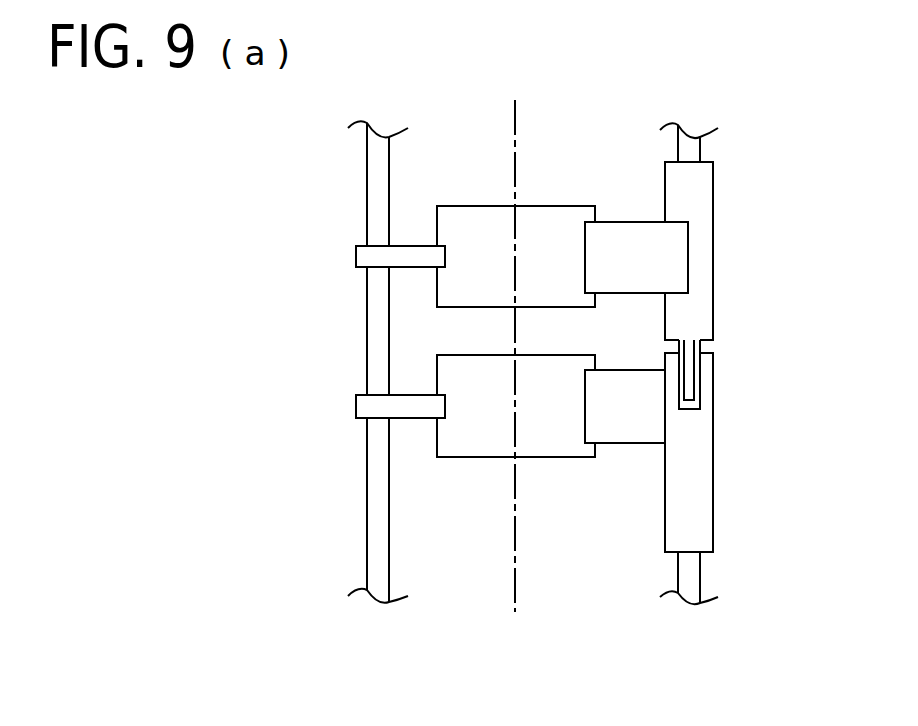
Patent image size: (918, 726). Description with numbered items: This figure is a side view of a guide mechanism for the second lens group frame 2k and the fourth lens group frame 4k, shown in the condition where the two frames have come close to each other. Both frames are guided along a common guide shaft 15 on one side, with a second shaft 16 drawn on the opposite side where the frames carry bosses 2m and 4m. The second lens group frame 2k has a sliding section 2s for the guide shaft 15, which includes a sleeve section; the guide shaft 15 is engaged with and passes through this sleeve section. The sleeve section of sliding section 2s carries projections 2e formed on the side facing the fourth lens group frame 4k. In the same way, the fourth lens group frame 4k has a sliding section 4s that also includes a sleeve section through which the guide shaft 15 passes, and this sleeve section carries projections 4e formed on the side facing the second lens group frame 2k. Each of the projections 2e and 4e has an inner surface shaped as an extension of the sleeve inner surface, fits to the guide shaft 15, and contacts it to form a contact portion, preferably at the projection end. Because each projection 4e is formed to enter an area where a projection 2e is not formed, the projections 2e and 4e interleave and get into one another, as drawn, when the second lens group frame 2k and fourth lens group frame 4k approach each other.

The second lens group frame 2k is at (563, 206).
The first gear boss 2m is at (360, 256).
The sliding section 2s is at (690, 188).
The projections 2e is at (690, 340).
The fourth lens group frame 4k is at (562, 445).
The second gear boss 4m is at (358, 408).
The sliding section 4s is at (696, 517).
The projections 4e is at (703, 394).
The guide shaft 15 is at (688, 577).
The shaft 16 is at (370, 516).